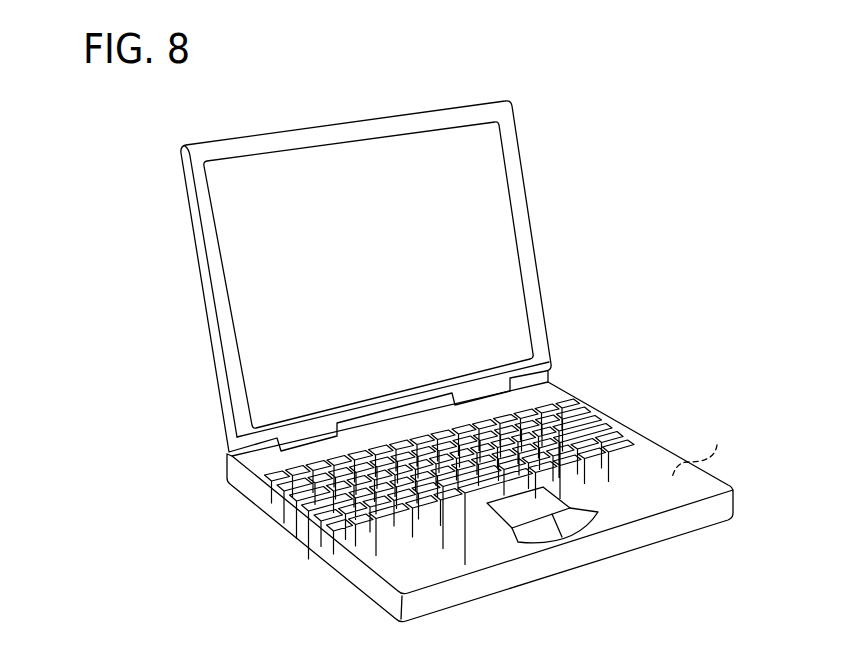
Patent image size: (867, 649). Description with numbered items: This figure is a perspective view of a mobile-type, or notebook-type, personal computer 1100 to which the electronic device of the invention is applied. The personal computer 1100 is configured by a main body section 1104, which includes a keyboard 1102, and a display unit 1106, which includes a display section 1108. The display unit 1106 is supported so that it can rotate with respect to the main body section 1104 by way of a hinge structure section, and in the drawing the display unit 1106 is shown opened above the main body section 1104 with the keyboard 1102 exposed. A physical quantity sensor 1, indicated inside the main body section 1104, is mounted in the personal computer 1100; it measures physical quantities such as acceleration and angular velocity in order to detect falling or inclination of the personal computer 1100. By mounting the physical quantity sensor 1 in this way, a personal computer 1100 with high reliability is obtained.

The personal computer 1100 is at (547, 118).
The keyboard 1102 is at (585, 421).
The main body section 1104 is at (470, 557).
The display unit 1106 is at (527, 193).
The display section 1108 is at (333, 170).
The physical quantity sensor 1 is at (700, 446).